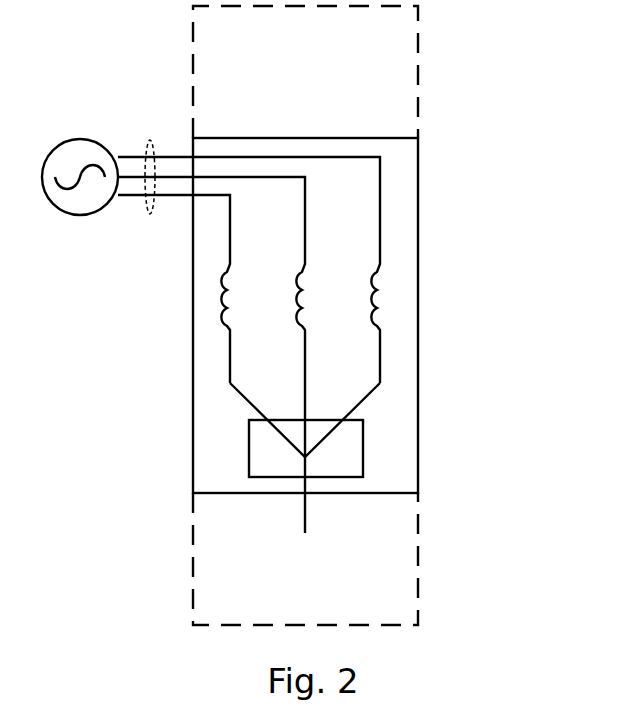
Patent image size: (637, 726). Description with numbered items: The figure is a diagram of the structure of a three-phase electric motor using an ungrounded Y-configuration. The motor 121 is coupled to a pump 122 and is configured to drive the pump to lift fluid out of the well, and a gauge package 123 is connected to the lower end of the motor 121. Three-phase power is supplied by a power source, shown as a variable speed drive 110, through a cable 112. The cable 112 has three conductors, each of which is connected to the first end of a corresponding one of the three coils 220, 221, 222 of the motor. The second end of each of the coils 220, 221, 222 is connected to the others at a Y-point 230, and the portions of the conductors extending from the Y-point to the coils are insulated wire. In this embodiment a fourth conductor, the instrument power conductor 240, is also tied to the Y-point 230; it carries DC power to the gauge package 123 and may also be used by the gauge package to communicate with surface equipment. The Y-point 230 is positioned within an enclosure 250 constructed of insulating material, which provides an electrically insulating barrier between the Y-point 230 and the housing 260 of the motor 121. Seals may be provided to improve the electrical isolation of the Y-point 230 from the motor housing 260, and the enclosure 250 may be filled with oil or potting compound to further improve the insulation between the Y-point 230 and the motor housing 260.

The variable speed drive 110 is at (80, 139).
The cable 112 is at (150, 140).
The motor 121 is at (364, 315).
The pump 122 is at (418, 93).
The gauge package 123 is at (418, 572).
The coil 220 is at (218, 318).
The coil 221 is at (292, 317).
The coil 222 is at (368, 318).
The Y-point 230 is at (305, 457).
The instrument power conductor 240 is at (305, 517).
The enclosure 250 is at (363, 432).
The motor housing 260 is at (418, 181).